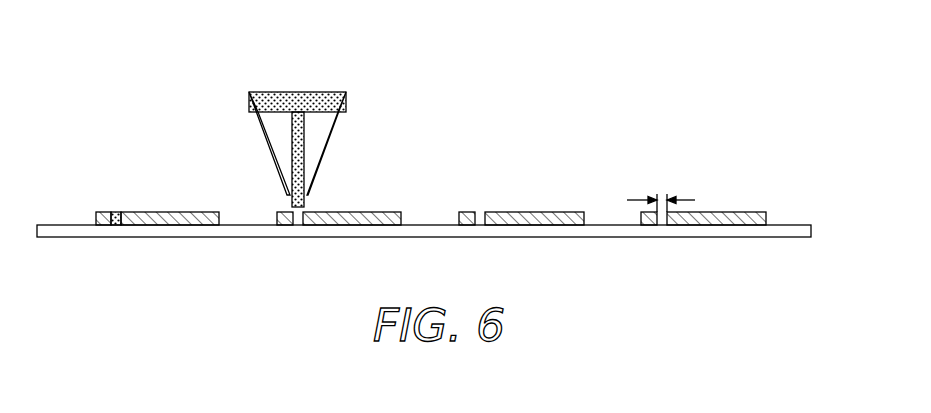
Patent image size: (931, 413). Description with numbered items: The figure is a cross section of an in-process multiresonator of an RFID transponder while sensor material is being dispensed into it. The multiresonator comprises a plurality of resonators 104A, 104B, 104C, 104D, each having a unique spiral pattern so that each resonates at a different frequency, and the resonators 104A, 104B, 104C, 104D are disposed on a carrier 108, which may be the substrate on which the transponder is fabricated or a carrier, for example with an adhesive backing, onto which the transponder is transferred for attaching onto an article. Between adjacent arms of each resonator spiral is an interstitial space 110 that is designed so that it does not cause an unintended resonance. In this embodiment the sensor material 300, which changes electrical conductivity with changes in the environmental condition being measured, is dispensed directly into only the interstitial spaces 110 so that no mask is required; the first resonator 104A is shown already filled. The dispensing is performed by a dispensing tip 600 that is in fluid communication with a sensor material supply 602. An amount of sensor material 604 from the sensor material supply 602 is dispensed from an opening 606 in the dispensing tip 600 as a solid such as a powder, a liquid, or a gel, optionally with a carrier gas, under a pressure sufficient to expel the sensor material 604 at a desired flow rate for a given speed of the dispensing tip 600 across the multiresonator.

The resonator 104A is at (100, 225).
The resonator 104B is at (283, 226).
The resonator 104C is at (467, 226).
The resonator 104D is at (648, 226).
The carrier 108 is at (790, 233).
The interstitial space 110 is at (662, 196).
The sensor material 300 is at (113, 212).
The dispensing tip 600 is at (302, 125).
The sensor material supply 602 is at (268, 102).
The sensor material 604 is at (303, 203).
The opening 606 is at (282, 203).